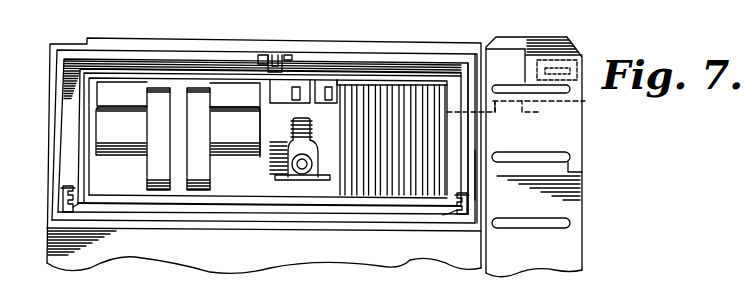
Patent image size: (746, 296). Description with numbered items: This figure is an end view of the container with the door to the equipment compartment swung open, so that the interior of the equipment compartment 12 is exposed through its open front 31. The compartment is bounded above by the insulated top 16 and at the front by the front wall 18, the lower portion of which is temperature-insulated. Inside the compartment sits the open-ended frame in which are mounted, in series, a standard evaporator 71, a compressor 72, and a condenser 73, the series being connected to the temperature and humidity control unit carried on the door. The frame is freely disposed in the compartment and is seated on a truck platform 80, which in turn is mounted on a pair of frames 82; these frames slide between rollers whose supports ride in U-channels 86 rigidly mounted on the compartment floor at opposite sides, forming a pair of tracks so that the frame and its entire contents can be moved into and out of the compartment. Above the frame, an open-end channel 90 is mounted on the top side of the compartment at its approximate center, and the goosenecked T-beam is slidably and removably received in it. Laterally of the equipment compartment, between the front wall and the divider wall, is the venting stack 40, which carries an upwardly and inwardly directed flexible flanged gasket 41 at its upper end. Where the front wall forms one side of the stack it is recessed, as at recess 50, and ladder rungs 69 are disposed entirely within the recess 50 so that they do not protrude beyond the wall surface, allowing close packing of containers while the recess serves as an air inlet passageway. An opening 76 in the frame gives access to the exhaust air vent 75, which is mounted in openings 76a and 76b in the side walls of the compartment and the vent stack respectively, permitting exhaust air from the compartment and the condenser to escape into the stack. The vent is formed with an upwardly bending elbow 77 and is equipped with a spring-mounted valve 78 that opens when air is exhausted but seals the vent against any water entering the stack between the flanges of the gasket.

The equipment compartment 12 is at (341, 66).
The top 16 is at (167, 44).
The front wall 18 is at (167, 254).
The open front 31 is at (72, 66).
The venting stack 40 is at (584, 208).
The flanged gasket 41 is at (562, 38).
The recess 50 is at (564, 249).
The ladder rungs 69 is at (572, 172).
The evaporator 71 is at (216, 91).
The compressor 72 is at (311, 182).
The condenser 73 is at (417, 84).
The exhaust air vent 75 is at (520, 123).
The opening 76 is at (446, 119).
The opening 76a is at (473, 150).
The opening 76b is at (448, 137).
The upwardly bending elbow 77 is at (541, 111).
The spring-mounted valve 78 is at (507, 100).
The truck platform 80 is at (218, 203).
The frames 82 is at (83, 207).
The U-channels 86 is at (69, 184).
The open-end channel 90 is at (288, 66).